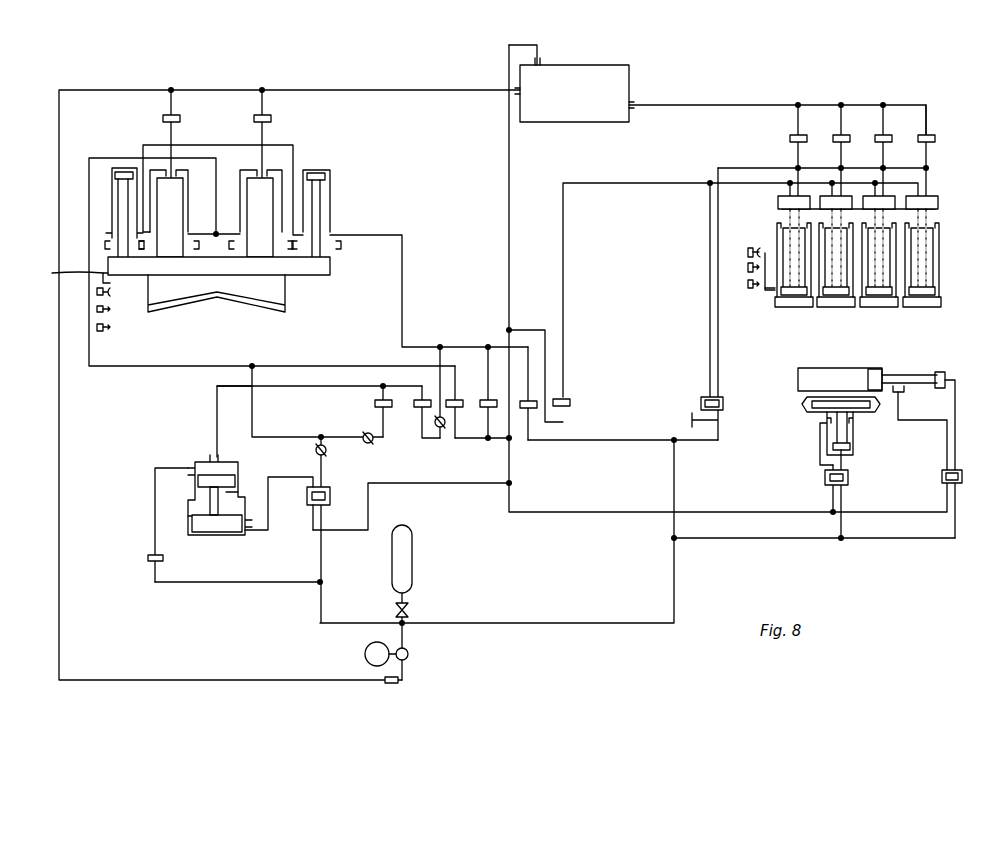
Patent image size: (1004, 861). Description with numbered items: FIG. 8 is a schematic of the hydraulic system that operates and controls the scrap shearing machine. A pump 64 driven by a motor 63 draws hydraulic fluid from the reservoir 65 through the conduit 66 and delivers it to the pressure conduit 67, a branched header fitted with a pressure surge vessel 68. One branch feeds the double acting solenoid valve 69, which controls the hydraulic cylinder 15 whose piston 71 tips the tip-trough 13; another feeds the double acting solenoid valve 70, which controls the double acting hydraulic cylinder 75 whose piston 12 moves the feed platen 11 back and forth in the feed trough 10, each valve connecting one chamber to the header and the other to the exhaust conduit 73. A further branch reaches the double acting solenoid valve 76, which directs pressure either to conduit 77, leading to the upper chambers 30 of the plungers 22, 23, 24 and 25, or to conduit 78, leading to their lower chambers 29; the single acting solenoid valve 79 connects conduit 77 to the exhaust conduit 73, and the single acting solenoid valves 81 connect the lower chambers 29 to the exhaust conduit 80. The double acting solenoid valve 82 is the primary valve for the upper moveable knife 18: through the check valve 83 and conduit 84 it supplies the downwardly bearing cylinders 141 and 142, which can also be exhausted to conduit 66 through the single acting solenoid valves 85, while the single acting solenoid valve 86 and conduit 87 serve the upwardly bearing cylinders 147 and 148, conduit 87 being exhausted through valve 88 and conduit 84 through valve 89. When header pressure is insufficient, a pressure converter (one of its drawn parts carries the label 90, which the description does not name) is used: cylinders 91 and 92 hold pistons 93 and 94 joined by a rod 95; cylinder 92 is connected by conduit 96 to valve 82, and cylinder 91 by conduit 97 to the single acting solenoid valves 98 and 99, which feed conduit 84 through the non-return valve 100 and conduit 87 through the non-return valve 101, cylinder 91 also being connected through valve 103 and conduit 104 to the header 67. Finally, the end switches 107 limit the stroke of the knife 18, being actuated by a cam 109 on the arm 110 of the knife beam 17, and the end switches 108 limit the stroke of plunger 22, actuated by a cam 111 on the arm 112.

The feed trough 10 is at (815, 368).
The feed platen 11 is at (875, 369).
The piston 12 is at (922, 372).
The tip-trough 13 is at (805, 408).
The hydraulic cylinder 15 is at (852, 443).
The knife beam 17 is at (330, 273).
The upper moveable knife 18 is at (216, 300).
The plunger 22 is at (793, 308).
The plunger 23 is at (835, 308).
The plunger 24 is at (879, 308).
The plunger 25 is at (936, 266).
The lower chambers 29 is at (916, 296).
The upper chambers 30 is at (939, 262).
The motor 63 is at (365, 656).
The pump 64 is at (409, 654).
The reservoir 65 is at (630, 70).
The conduit 66 is at (352, 90).
The pressure conduit 67 is at (618, 440).
The pressure surge vessel 68 is at (412, 540).
The double acting solenoid valve 69 is at (825, 483).
The double acting solenoid valve 70 is at (962, 483).
The piston 71 is at (847, 427).
The exhaust conduit 73 is at (509, 198).
The double acting hydraulic cylinder 75 is at (904, 374).
The double acting solenoid valve 76 is at (723, 400).
The conduit 77 is at (645, 183).
The conduit 78 is at (718, 355).
The single acting solenoid valve 79 is at (570, 406).
The exhaust conduit 80 is at (702, 105).
The single acting solenoid valves 81 is at (790, 139).
The double acting solenoid valve 82 is at (326, 487).
The non-return valve 83 is at (316, 450).
The conduit 84 is at (214, 231).
The single acting solenoid valves 85 is at (180, 118).
The single acting solenoid valve 86 is at (522, 418).
The conduit 87 is at (293, 157).
The single acting solenoid valve 88 is at (480, 418).
The single acting solenoid valve 89 is at (460, 400).
The valve stem 90 is at (228, 490).
The cylinder 91 is at (198, 486).
The cylinder 92 is at (188, 518).
The piston 93 is at (222, 470).
The piston 94 is at (218, 532).
The rod 95 is at (240, 494).
The conduit 96 is at (268, 515).
The conduit 97 is at (217, 411).
The single acting solenoid valve 98 is at (375, 406).
The single acting solenoid valve 99 is at (414, 408).
The non-return valve 100 is at (370, 444).
The non-return valve 101 is at (444, 428).
The valve 103 is at (150, 562).
The conduit 104 is at (236, 582).
The end switches 107 is at (112, 312).
The end switches 108 is at (746, 252).
The cam 109 is at (112, 292).
The arm 110 is at (63, 269).
The cam 111 is at (765, 250).
The arm 112 is at (762, 292).
The single acting downwardly bearing hydraulic cylinder 141 is at (184, 186).
The single acting downwardly bearing hydraulic cylinder 142 is at (245, 172).
The single acting upwardly bearing cylinder 147 is at (112, 206).
The single acting upwardly bearing cylinder 148 is at (330, 198).